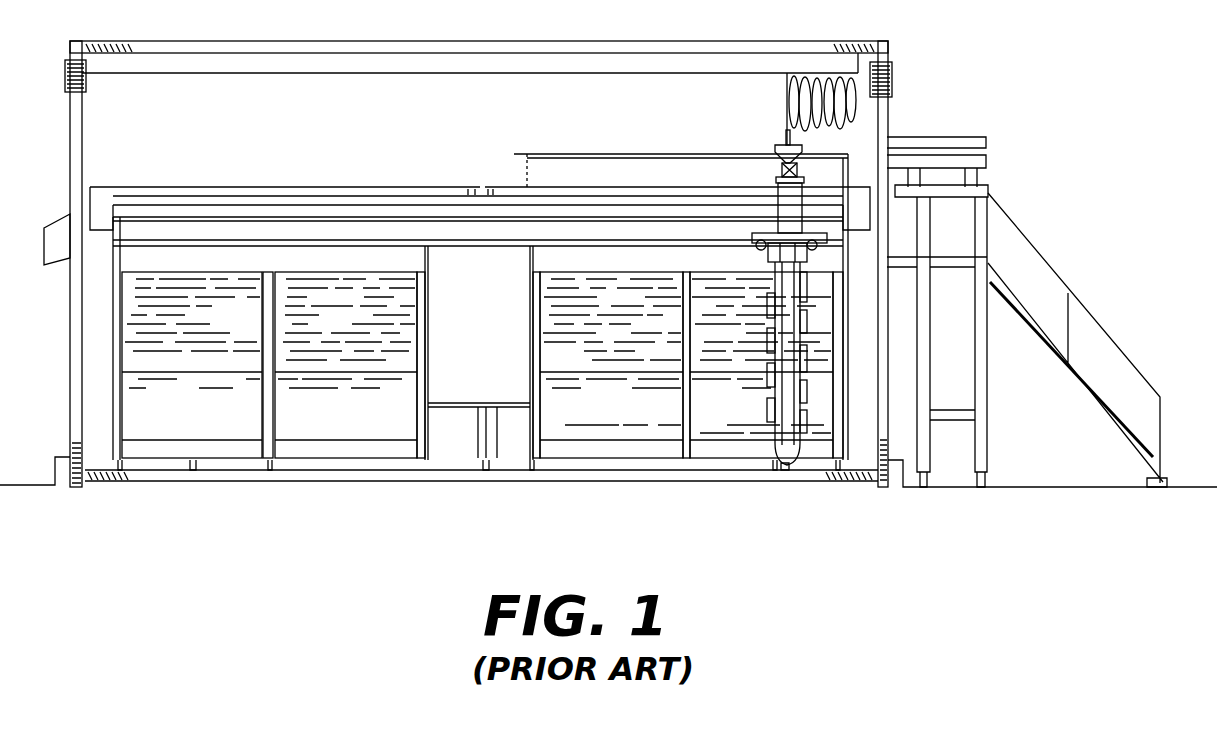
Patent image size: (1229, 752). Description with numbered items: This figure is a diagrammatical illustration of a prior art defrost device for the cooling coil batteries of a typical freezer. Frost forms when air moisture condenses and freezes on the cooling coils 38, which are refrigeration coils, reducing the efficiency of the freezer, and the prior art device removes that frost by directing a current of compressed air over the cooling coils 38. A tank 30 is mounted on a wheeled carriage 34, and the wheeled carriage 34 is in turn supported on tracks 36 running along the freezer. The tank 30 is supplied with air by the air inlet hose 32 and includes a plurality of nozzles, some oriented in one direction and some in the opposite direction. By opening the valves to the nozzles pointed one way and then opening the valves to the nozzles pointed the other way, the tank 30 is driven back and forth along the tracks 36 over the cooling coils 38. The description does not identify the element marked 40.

The tank 30 is at (775, 440).
The air inlet hose 32 is at (784, 108).
The wheeled carriage 34 is at (767, 228).
The tracks 36 is at (235, 242).
The cooling coils 38 is at (182, 404).
The sensors 40 is at (768, 382).